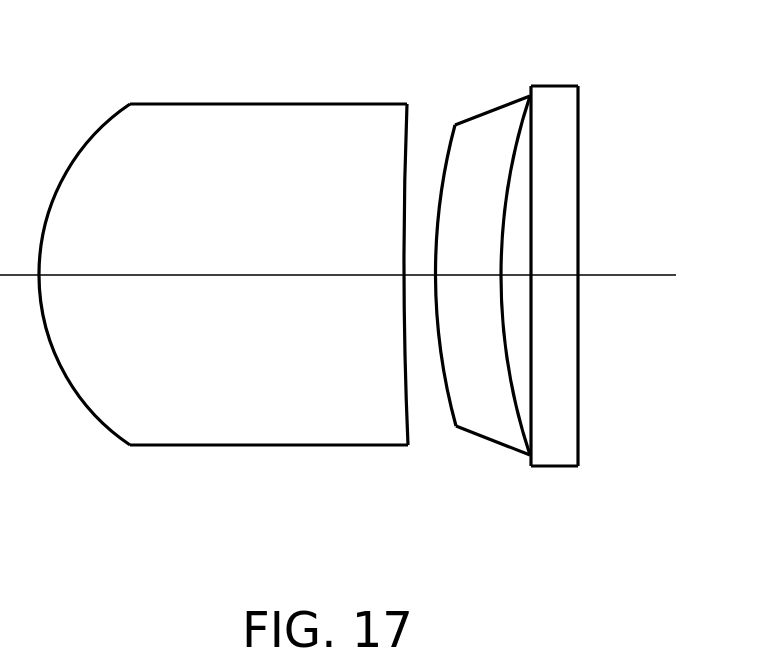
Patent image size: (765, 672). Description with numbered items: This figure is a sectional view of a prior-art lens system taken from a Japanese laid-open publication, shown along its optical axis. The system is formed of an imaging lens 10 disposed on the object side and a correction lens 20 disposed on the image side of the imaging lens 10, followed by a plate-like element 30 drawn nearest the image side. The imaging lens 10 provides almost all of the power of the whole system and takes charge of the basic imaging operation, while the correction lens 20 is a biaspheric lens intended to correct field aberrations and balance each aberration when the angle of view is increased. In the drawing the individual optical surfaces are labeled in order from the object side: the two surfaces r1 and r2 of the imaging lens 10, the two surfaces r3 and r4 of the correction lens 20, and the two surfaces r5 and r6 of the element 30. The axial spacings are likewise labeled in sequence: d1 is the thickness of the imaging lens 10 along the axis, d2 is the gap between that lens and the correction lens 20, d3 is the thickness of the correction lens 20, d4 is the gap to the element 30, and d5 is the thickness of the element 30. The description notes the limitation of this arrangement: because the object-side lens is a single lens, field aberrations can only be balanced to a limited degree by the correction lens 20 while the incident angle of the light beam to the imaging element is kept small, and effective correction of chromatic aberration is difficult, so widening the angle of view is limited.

The imaging lens 10 is at (231, 228).
The correction lens 20 is at (474, 233).
The cover glass / filter plate 30 is at (596, 255).
The object-side surface of first lens r1 is at (119, 111).
The image-side surface of first lens r2 is at (408, 136).
The object-side surface of second lens r3 is at (454, 146).
The image-side surface of second lens r4 is at (528, 133).
The object-side surface of plate r5 is at (531, 132).
The image-side surface of plate r6 is at (578, 105).
The axial thickness of first lens d1 is at (210, 275).
The axial distance between first and second lens d2 is at (418, 275).
The axial thickness of second lens d3 is at (472, 275).
The axial distance between second lens and plate d4 is at (510, 275).
The axial thickness of plate d5 is at (552, 275).